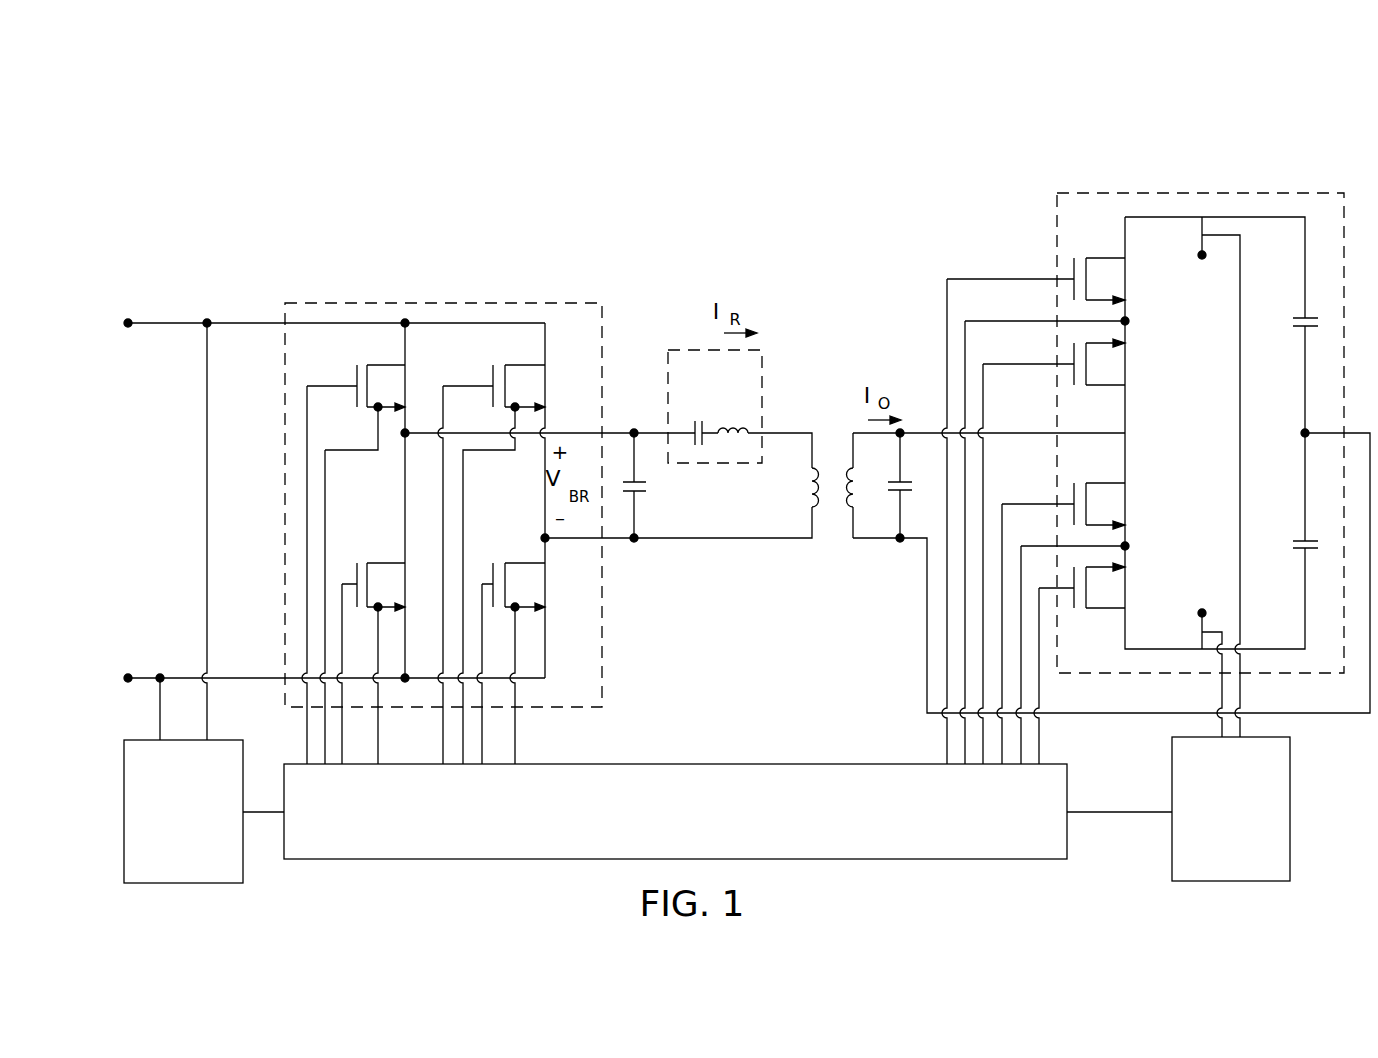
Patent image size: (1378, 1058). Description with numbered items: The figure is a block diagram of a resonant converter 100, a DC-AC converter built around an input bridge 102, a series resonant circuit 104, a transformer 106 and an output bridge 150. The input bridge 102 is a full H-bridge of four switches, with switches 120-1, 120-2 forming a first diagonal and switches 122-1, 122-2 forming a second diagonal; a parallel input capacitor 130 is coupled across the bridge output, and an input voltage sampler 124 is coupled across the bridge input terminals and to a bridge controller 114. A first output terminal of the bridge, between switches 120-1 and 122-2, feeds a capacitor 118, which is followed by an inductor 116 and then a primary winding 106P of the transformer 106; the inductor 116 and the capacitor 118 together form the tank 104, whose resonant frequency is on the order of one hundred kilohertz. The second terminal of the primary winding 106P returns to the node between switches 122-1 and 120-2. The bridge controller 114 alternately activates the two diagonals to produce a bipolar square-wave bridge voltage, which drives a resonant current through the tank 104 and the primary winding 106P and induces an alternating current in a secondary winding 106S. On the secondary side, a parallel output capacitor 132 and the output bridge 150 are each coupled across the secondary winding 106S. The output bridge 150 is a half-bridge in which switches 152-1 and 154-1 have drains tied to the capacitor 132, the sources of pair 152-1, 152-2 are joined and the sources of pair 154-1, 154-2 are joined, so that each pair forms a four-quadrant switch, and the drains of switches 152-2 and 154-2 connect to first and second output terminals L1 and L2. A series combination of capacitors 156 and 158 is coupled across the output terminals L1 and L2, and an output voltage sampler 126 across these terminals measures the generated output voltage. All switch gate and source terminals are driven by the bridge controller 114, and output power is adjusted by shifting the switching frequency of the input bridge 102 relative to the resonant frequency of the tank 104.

The resonant converter 100 is at (750, 150).
The input bridge 102 is at (316, 300).
The series resonant circuit 104 is at (668, 350).
The transformer 106 is at (828, 445).
The primary winding 106P is at (790, 488).
The secondary winding 106S is at (838, 516).
The bridge controller 114 is at (838, 819).
The inductor 116 is at (729, 420).
The capacitor 118 is at (696, 418).
The switch 120-1 is at (387, 365).
The switch 120-2 is at (523, 560).
The switch 122-1 is at (527, 365).
The switch 122-2 is at (385, 560).
The input voltage sampler 124 is at (197, 858).
The output voltage sampler 126 is at (1245, 858).
The parallel input capacitor 130 is at (642, 494).
The parallel output capacitor 132 is at (892, 492).
The output bridge 150 is at (1088, 192).
The switch 152-1 is at (1118, 367).
The switch 152-2 is at (1118, 284).
The switch 154-1 is at (1118, 509).
The switch 154-2 is at (1118, 592).
The capacitor 156 is at (1300, 315).
The capacitor 158 is at (1298, 538).
The first output terminal L1 is at (1199, 251).
The second output terminal L2 is at (1198, 615).